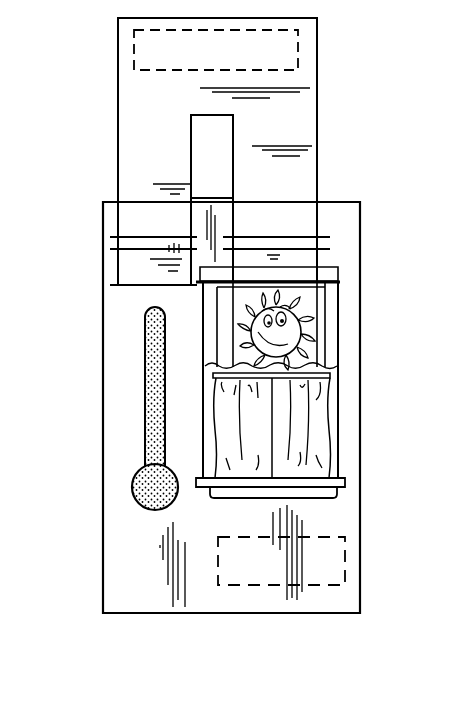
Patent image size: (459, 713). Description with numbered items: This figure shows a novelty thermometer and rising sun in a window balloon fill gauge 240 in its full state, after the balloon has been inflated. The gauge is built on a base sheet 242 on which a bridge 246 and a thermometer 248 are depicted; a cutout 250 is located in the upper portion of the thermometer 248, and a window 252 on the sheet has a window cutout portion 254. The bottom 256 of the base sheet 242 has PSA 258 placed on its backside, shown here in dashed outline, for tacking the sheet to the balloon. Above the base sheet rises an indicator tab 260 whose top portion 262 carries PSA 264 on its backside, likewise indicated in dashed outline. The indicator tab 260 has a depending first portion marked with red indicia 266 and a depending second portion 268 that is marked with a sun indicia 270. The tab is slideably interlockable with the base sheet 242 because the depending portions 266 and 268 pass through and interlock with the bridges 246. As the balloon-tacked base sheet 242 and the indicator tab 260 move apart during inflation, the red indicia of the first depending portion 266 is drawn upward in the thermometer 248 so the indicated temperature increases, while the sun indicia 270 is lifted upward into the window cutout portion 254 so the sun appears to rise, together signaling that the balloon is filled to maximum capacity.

The window balloon fill gauge 240 is at (340, 178).
The base sheet 242 is at (352, 198).
The bridge 246 is at (137, 242).
The thermometer 248 is at (152, 488).
The cutout 250 is at (109, 397).
The window 252 is at (343, 432).
The window cutout portion 254 is at (326, 335).
The bottom 256 is at (318, 581).
The PSA 258 is at (327, 585).
The indicator tab 260 is at (170, 143).
The top portion 262 is at (128, 16).
The PSA 264 is at (300, 67).
The depending first portion 266 is at (152, 330).
The depending second portion 268 is at (310, 295).
The sun indicia 270 is at (318, 368).